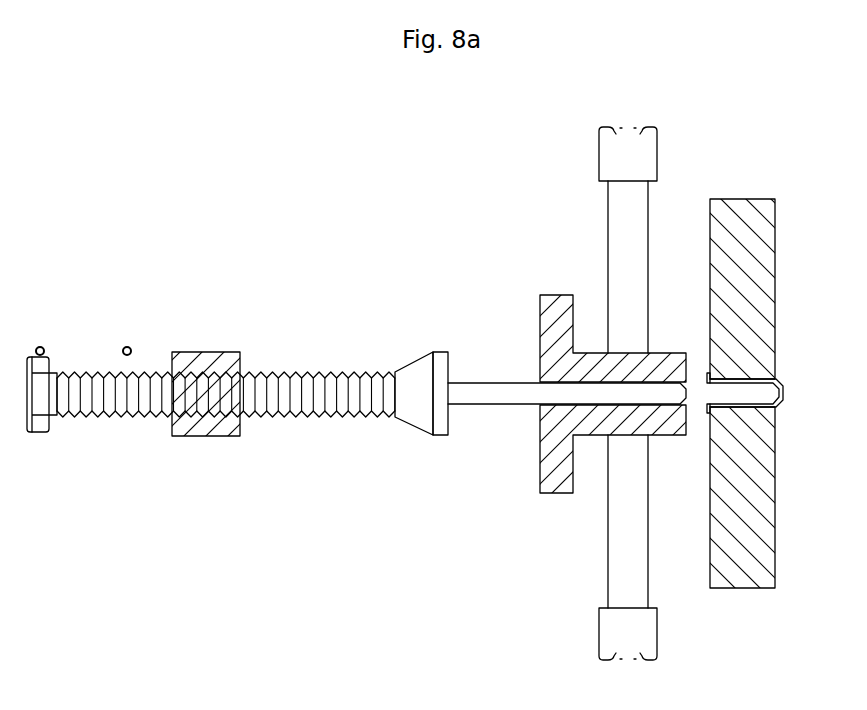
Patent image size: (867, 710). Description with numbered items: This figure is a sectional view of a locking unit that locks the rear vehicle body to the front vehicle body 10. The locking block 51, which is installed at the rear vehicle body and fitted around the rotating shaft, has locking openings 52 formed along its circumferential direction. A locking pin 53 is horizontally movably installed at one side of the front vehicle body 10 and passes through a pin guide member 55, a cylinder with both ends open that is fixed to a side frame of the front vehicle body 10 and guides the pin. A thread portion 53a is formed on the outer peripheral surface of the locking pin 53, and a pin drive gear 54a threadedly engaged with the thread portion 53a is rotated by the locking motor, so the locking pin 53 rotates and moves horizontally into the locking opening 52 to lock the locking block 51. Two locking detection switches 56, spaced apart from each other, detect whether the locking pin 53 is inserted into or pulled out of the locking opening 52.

The front vehicle body 10 is at (613, 203).
The locking block 51 is at (745, 210).
The locking opening 52 is at (780, 387).
The locking pin 53 is at (488, 383).
The thread portion 53a is at (112, 417).
The pin drive gear 54a is at (202, 358).
The pin guide member 55 is at (546, 474).
The locking detection switch 56 is at (124, 347).